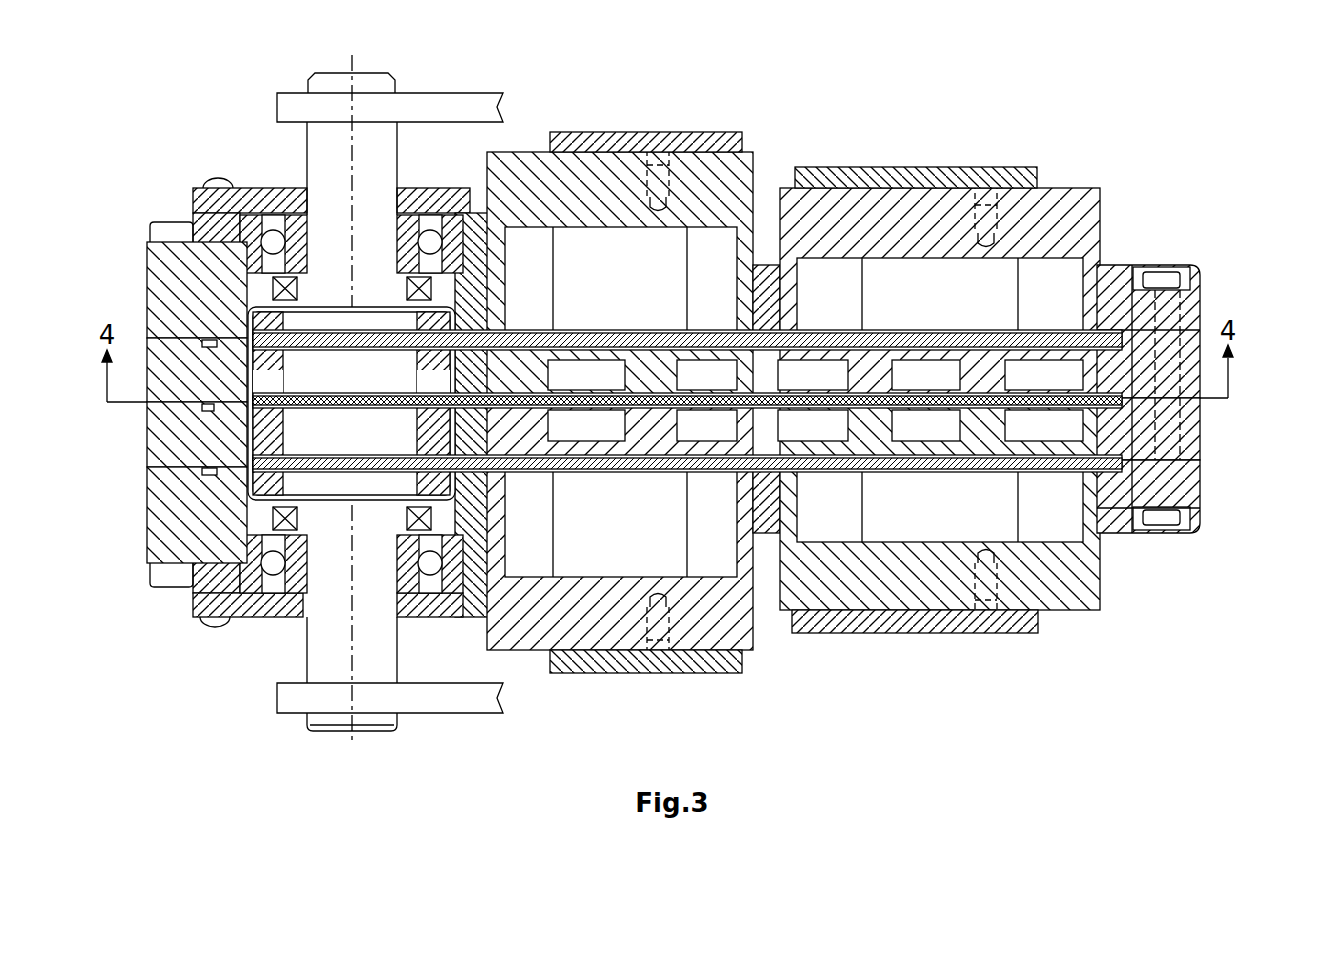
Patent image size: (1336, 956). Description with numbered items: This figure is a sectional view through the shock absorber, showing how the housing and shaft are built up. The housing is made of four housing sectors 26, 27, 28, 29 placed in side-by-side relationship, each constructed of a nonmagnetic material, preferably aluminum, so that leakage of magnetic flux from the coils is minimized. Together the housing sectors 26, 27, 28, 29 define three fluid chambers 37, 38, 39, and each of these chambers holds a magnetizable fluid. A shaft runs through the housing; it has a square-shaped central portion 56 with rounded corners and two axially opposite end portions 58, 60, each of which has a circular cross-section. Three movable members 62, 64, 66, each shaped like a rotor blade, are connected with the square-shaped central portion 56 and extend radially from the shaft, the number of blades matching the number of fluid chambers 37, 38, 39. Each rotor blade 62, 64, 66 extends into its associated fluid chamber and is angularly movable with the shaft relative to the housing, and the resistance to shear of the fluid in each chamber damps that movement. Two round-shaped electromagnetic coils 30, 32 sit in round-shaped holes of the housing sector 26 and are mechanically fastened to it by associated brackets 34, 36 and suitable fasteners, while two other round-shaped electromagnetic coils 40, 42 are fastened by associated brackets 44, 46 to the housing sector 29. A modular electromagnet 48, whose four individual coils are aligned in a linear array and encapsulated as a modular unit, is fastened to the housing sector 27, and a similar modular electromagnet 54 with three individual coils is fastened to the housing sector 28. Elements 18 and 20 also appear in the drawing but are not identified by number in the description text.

The lower mounting plate 18 is at (463, 698).
The upper mounting plate 20 is at (430, 107).
The housing sector 26 is at (207, 515).
The housing sector 27 is at (207, 437).
The housing sector 28 is at (173, 377).
The housing sector 29 is at (200, 288).
The electromagnetic coil 30 is at (653, 537).
The electromagnetic coil 32 is at (983, 430).
The bracket 34 is at (590, 661).
The bracket 36 is at (886, 622).
The fluid chamber 37 is at (1130, 460).
The fluid chamber 38 is at (1120, 400).
The fluid chamber 39 is at (1123, 332).
The electromagnetic coil 40 is at (648, 267).
The electromagnetic coil 42 is at (975, 290).
The bracket 44 is at (702, 140).
The bracket 46 is at (1027, 177).
The modular electromagnet 48 is at (1017, 477).
The modular electromagnet 54 is at (985, 377).
The square-shaped central portion 56 is at (327, 428).
The end portion 58 is at (322, 640).
The end portion 60 is at (330, 160).
The movable member 62 is at (962, 457).
The movable member 64 is at (877, 400).
The movable member 66 is at (893, 333).